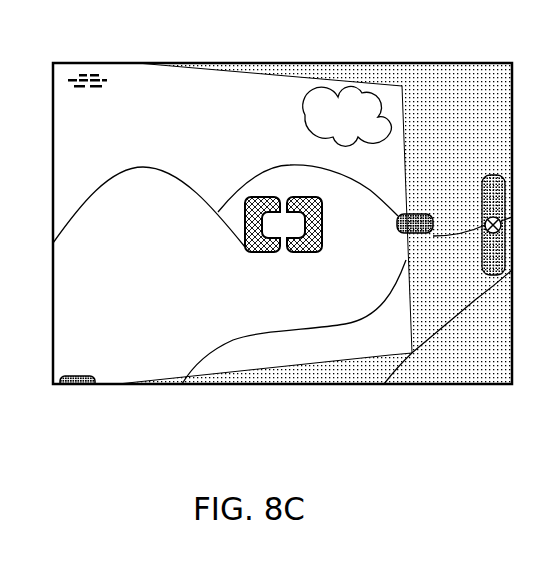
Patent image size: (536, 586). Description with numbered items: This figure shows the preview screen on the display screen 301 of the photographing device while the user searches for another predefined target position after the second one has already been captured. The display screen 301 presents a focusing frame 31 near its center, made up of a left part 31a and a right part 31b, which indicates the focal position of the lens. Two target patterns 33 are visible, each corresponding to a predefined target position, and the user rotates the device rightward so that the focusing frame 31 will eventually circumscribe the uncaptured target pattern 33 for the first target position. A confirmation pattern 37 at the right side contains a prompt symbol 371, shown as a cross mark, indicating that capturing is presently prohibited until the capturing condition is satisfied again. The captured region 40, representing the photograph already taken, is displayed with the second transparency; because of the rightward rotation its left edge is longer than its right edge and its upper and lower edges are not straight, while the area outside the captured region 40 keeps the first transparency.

The captured region 40 is at (175, 118).
The display screen 301 is at (417, 385).
The focusing frame 31 is at (269, 262).
The left part 31a is at (263, 253).
The right part 31b is at (307, 253).
The target pattern 33 is at (272, 299).
The confirmation pattern 37 is at (494, 278).
The prompt symbol 371 is at (483, 203).